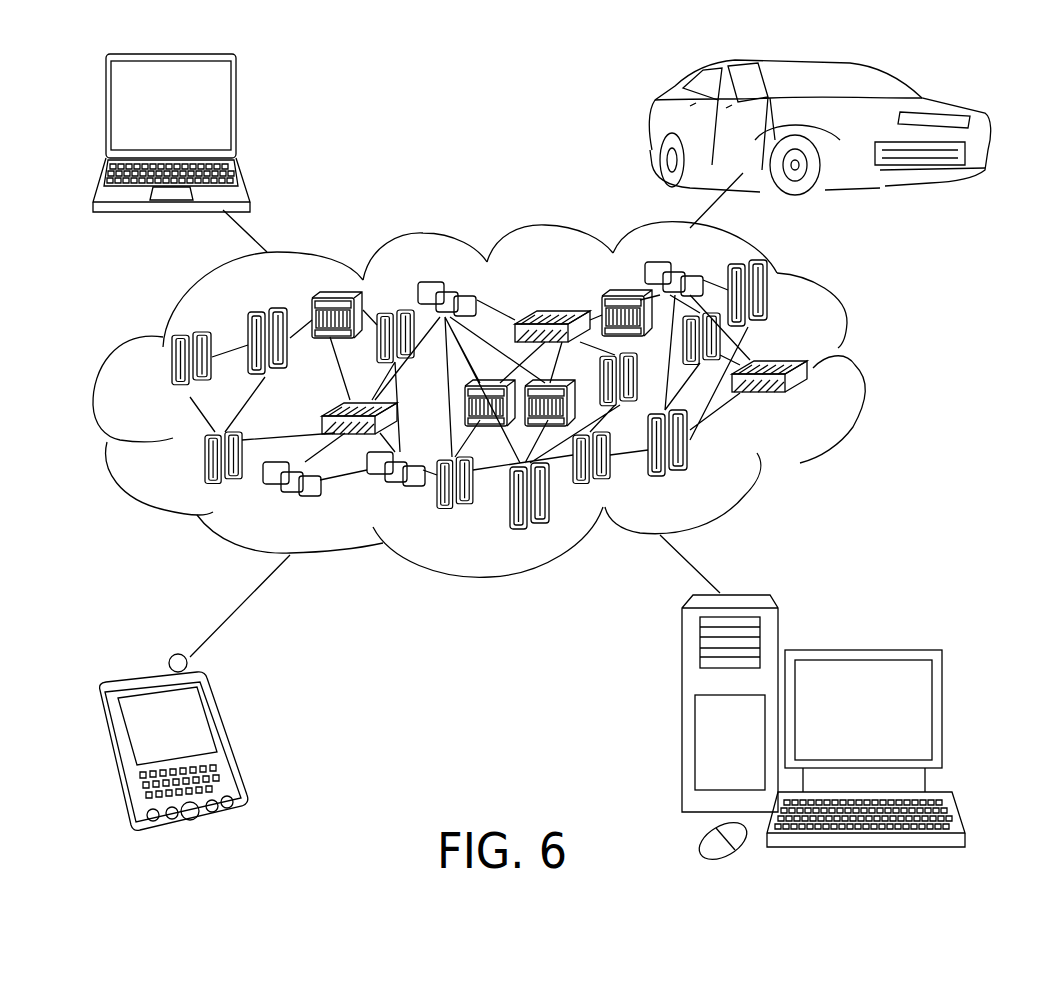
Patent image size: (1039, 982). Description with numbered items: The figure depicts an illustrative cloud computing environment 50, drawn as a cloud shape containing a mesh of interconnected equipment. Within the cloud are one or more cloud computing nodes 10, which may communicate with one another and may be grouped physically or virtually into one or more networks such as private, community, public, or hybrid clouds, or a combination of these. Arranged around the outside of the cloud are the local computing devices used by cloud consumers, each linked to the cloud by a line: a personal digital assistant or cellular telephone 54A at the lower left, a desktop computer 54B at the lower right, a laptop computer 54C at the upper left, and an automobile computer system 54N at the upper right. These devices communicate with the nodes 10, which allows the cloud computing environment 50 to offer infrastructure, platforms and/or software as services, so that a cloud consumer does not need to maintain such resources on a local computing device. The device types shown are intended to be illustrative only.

The cloud computing nodes 10 is at (812, 403).
The cloud computing environment 50 is at (865, 377).
The personal digital assistant or cellular telephone 54A is at (237, 740).
The desktop computer 54B is at (860, 648).
The laptop computer 54C is at (240, 113).
The automobile computer system 54N is at (652, 132).